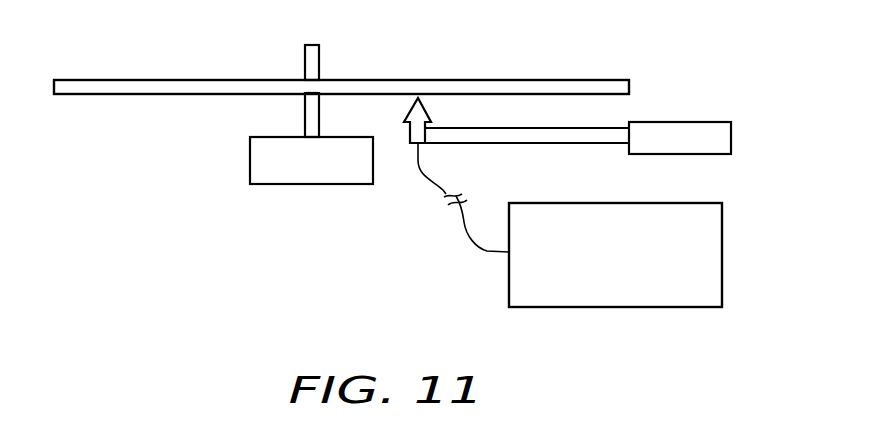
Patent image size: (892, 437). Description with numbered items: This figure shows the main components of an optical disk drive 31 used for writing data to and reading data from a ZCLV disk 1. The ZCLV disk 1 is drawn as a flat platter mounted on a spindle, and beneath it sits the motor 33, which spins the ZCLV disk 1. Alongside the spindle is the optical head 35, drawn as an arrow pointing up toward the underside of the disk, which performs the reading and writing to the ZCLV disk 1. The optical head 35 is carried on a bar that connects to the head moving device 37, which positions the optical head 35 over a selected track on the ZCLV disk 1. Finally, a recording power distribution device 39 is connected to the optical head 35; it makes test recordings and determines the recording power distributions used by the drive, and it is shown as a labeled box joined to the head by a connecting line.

The ZCLV disk 1 is at (94, 80).
The optical disk drive 31 is at (176, 282).
The motor 33 is at (250, 163).
The optical head 35 is at (407, 111).
The head moving device 37 is at (686, 122).
The recording power distribution device 39 is at (710, 300).